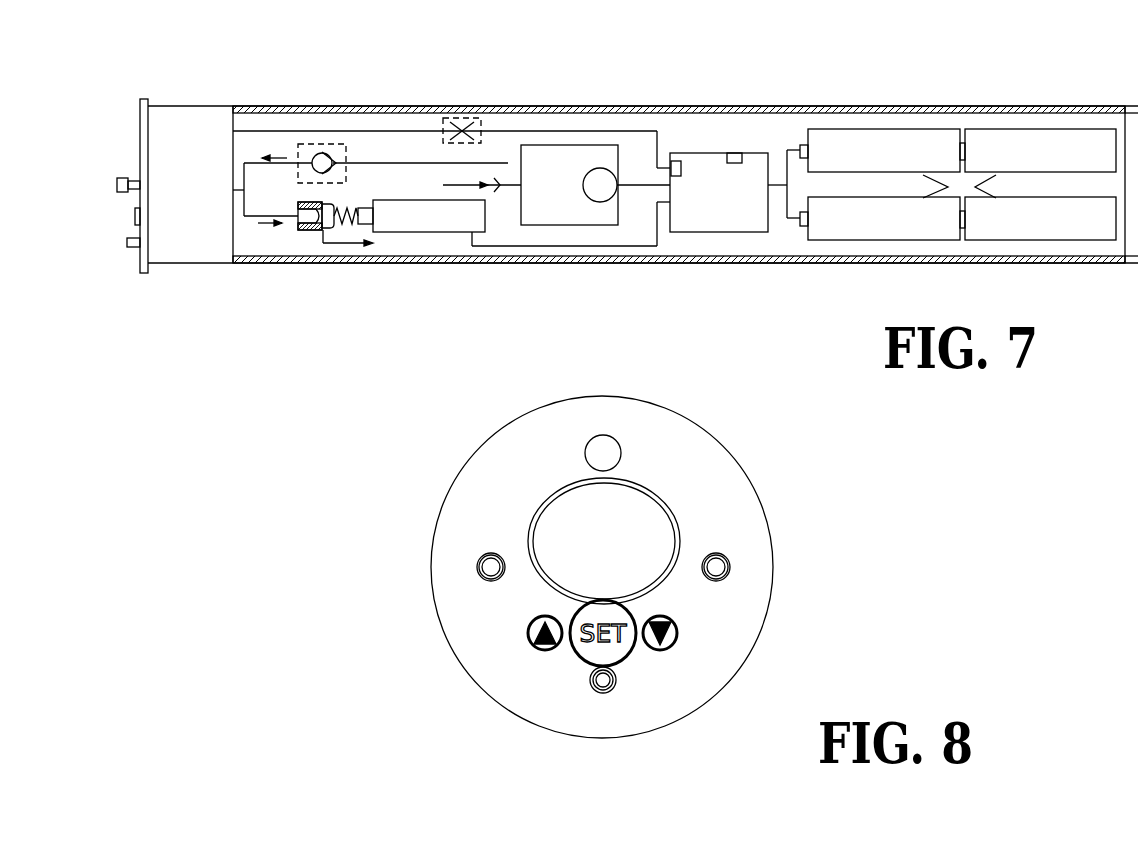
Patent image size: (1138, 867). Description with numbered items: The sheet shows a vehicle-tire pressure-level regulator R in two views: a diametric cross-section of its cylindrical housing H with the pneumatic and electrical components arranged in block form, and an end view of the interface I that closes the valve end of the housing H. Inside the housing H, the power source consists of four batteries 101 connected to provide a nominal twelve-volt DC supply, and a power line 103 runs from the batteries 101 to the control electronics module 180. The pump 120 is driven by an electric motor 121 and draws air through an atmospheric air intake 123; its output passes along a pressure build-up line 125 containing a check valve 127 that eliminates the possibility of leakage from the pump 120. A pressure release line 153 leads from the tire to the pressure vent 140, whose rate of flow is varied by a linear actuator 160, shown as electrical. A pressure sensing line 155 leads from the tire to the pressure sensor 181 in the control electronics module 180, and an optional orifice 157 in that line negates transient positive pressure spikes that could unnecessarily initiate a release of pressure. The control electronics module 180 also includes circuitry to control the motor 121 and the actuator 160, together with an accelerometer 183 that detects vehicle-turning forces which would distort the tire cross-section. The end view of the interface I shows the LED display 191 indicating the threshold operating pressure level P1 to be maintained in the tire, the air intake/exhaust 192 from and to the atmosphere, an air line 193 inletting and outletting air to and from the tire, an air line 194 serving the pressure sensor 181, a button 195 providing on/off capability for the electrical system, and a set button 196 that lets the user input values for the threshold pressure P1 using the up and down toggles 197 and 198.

In FIG. 7, the interface I is at (186, 106).
In FIG. 8, the interface I is at (830, 583).
In FIG. 7, the housing H is at (410, 131).
In FIG. 7, the regulator R is at (815, 78).
In FIG. 7, the batteries 101 is at (958, 184).
In FIG. 7, the power line 103 is at (778, 185).
In FIG. 7, the pump 120 is at (595, 182).
In FIG. 7, the electric motor 121 is at (603, 168).
In FIG. 7, the atmospheric air intake 123 is at (508, 163).
In FIG. 7, the fluid line 125 is at (377, 163).
In FIG. 7, the check valve 127 is at (325, 153).
In FIG. 7, the pressure vent 140 is at (317, 232).
In FIG. 7, the pressure release line 153 is at (293, 216).
In FIG. 7, the pressure sensing line 155 is at (310, 99).
In FIG. 7, the orifice 157 is at (461, 118).
In FIG. 7, the actuator 160 is at (452, 232).
In FIG. 7, the control electronics module 180 is at (703, 181).
In FIG. 7, the pressure sensor 181 is at (673, 160).
In FIG. 7, the accelerometer 183 is at (734, 153).
In FIG. 8, the LED display 191 is at (554, 486).
In FIG. 8, the air intake/exhaust 192 is at (590, 436).
In FIG. 7, the air line 193 is at (130, 180).
In FIG. 8, the air line 193 is at (728, 558).
In FIG. 8, the air line 194 is at (480, 568).
In FIG. 7, the button 195 is at (130, 245).
In FIG. 8, the button 195 is at (597, 690).
In FIG. 7, the set button 196 is at (135, 216).
In FIG. 8, the set button 196 is at (579, 653).
In FIG. 8, the up toggle 197 is at (530, 640).
In FIG. 8, the down toggle 198 is at (678, 637).
In FIG. 8, the threshold operating pressure level P1 is at (555, 538).